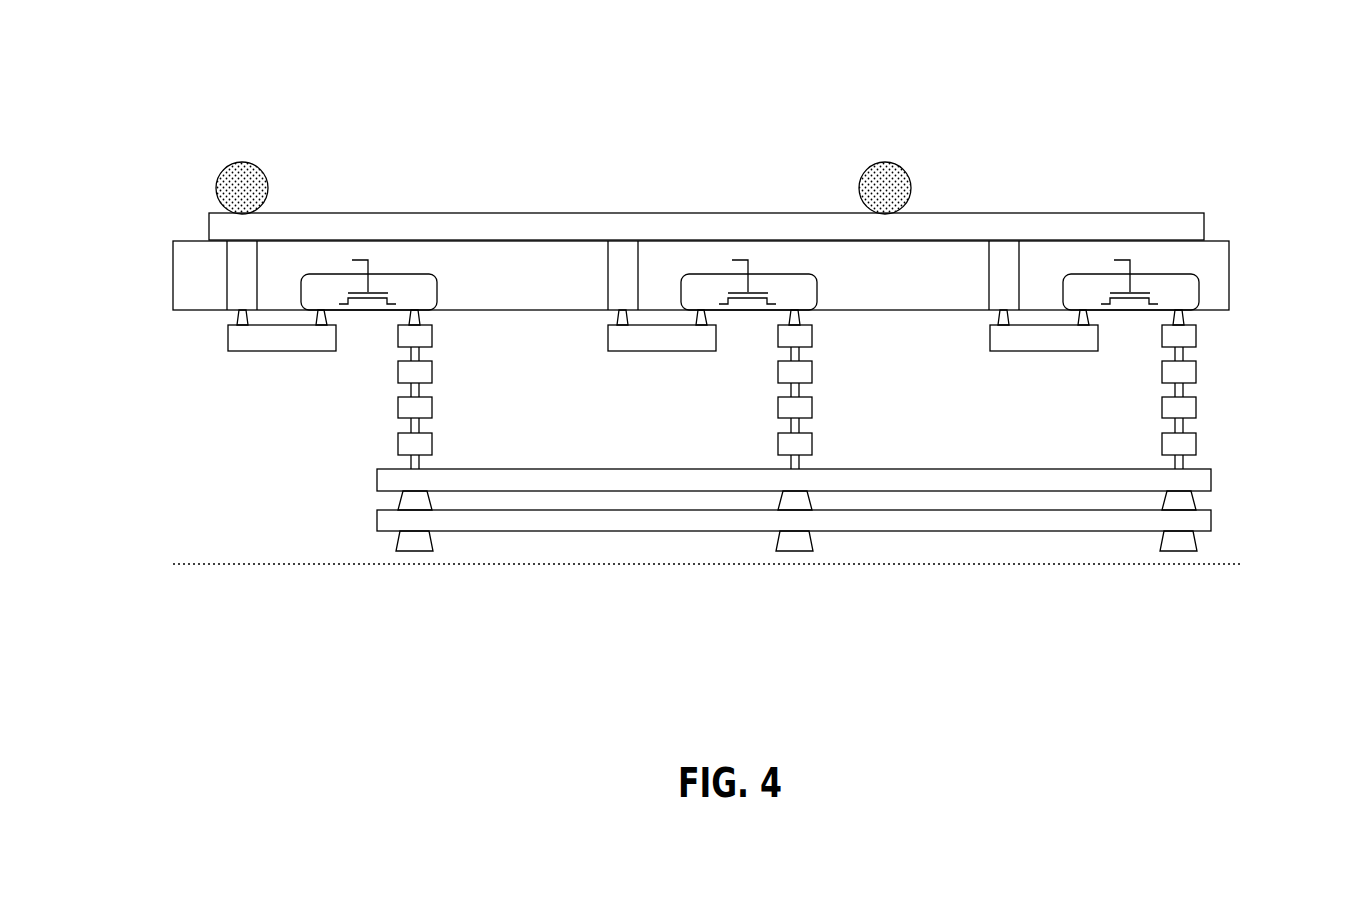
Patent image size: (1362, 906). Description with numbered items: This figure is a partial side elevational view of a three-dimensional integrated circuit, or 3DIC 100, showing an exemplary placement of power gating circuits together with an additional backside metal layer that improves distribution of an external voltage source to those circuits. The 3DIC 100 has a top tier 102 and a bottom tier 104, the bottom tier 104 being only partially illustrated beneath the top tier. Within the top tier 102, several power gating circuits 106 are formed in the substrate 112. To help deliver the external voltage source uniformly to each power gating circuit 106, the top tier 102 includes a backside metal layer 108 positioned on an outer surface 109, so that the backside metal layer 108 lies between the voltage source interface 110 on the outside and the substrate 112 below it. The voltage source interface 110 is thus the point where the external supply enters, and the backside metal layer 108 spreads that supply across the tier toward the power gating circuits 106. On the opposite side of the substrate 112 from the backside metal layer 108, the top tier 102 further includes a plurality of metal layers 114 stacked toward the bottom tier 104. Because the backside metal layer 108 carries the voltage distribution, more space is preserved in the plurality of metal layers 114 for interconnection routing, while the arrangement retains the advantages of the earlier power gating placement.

The 3DIC 100 is at (1040, 134).
The top tier 102 is at (1292, 380).
The bottom tier 104 is at (1292, 583).
The power gating circuit 106 is at (437, 288).
The backside metal layer 108 is at (208, 222).
The outer surface 109 is at (1210, 241).
The voltage source interface 110 is at (266, 178).
The substrate 112 is at (173, 272).
The plurality of metal layers 114 is at (1230, 325).